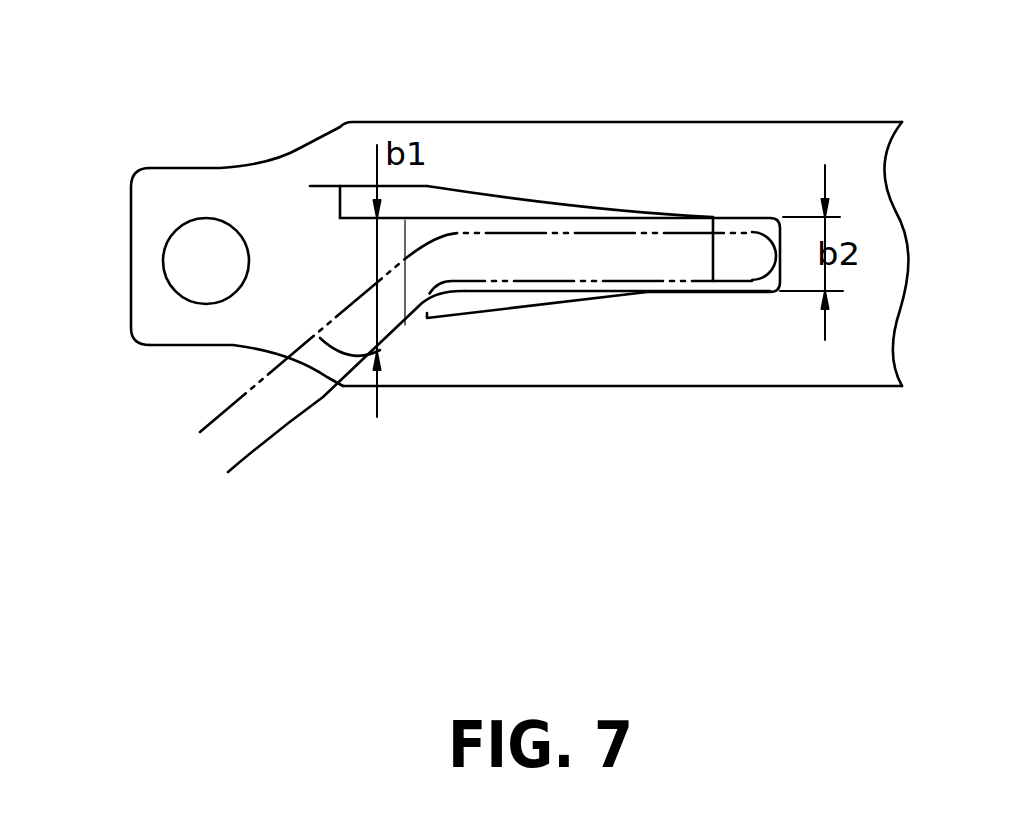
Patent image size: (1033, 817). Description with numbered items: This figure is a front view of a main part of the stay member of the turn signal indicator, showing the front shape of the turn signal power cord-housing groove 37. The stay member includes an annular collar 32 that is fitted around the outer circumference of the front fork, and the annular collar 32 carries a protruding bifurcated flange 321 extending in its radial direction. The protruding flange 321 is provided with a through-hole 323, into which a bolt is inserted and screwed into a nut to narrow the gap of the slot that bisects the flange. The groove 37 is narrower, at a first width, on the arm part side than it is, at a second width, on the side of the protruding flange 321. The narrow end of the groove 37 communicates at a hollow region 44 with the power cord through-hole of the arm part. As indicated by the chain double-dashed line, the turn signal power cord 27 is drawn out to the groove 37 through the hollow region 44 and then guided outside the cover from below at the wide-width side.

The turn signal power cord 27 is at (321, 400).
The annular collar 32 is at (638, 122).
The protruding bifurcated flange 321 is at (150, 170).
The through-hole 323 is at (194, 218).
The turn signal power cord-housing groove 37 is at (480, 313).
The hollow region 44 is at (770, 283).